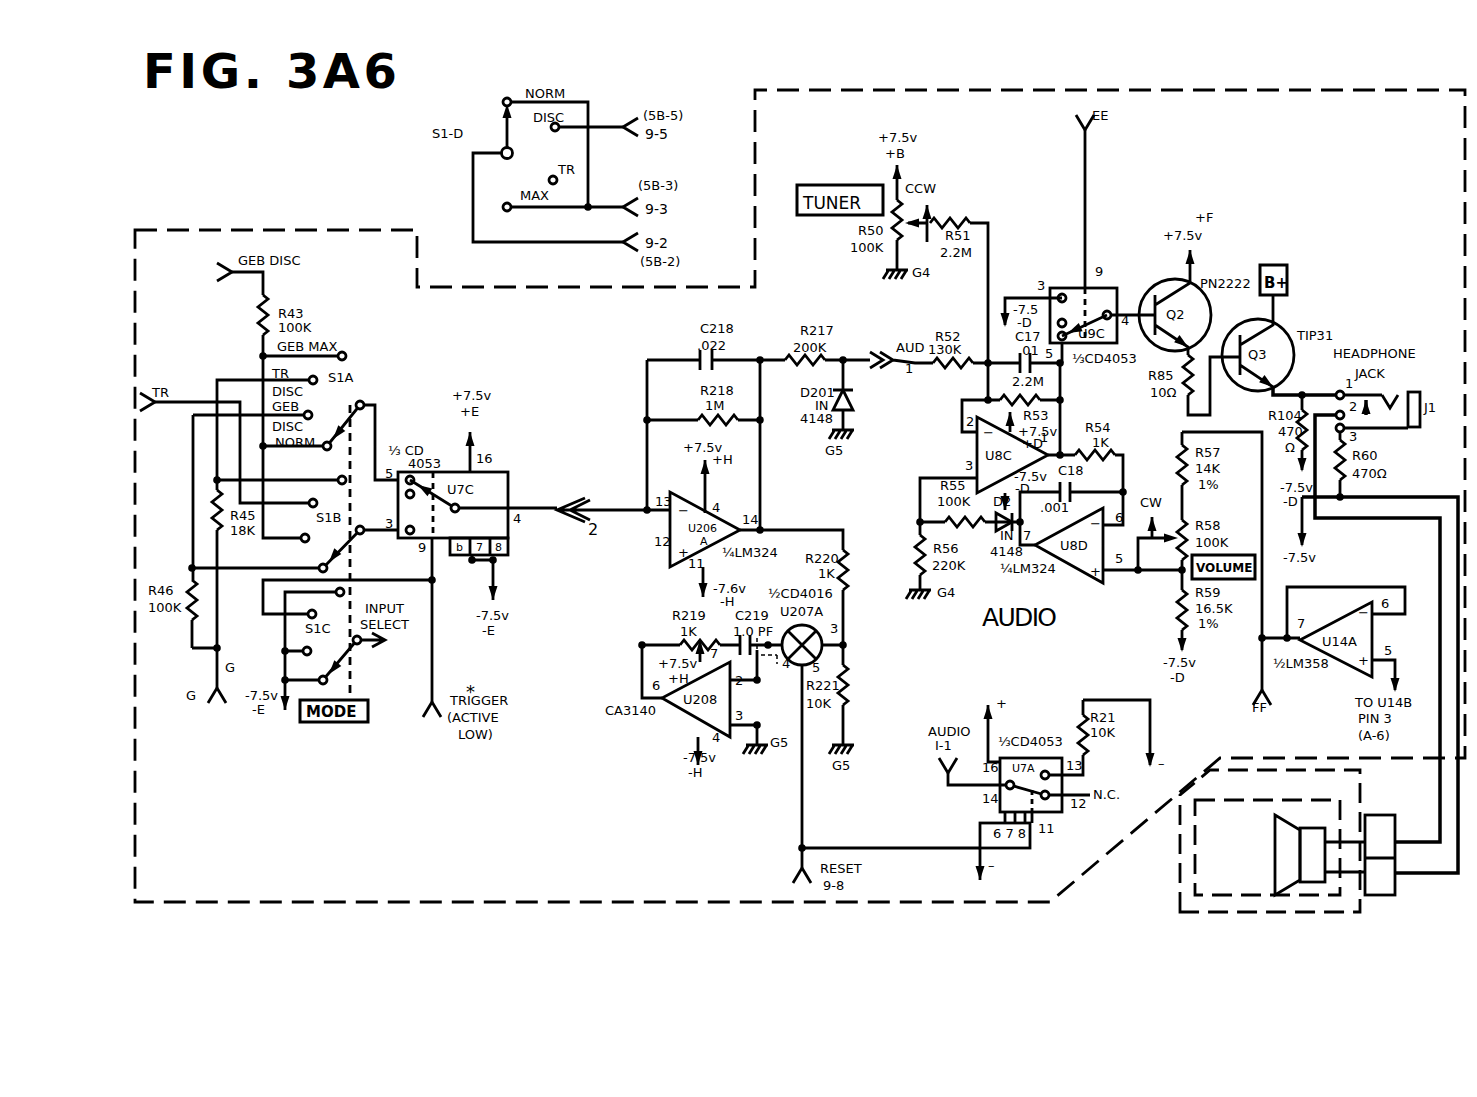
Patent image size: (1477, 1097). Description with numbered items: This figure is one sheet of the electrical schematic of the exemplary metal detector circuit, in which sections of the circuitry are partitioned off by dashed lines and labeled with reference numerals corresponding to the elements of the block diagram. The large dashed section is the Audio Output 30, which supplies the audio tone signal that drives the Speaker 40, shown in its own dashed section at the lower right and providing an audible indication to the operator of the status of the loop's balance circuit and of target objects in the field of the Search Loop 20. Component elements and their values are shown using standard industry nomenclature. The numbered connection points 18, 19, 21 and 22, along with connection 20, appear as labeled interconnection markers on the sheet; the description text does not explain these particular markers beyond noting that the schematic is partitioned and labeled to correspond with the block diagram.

The Audio Output 30 is at (295, 228).
The Speaker 40 is at (1180, 865).
The audio signal connection point 18 is at (888, 379).
The GEB DISC input connection 19 is at (268, 288).
The Search Loop 20 is at (1090, 170).
The audio amplifier node connection 21 is at (1066, 408).
The transistor Q2 base connection 22 is at (1128, 300).